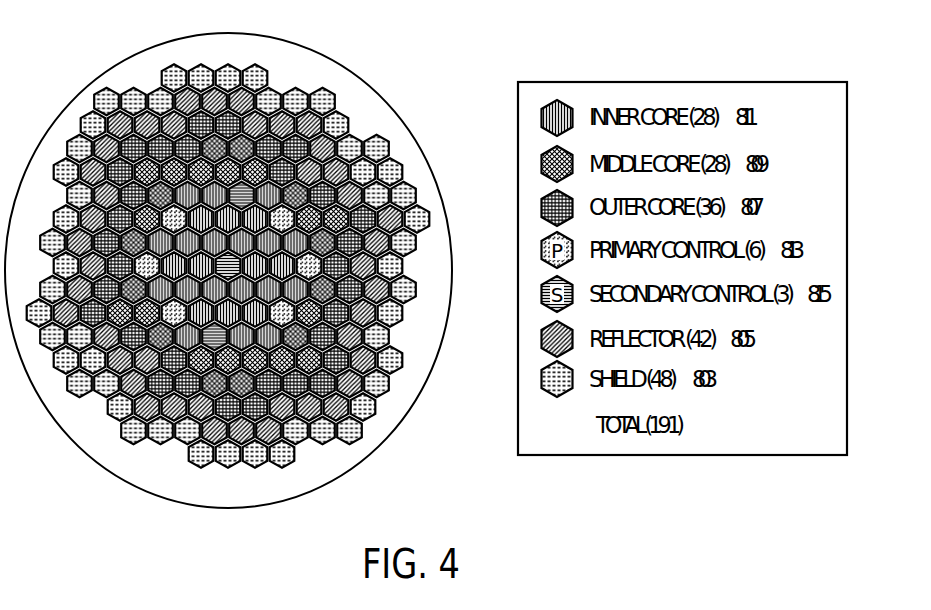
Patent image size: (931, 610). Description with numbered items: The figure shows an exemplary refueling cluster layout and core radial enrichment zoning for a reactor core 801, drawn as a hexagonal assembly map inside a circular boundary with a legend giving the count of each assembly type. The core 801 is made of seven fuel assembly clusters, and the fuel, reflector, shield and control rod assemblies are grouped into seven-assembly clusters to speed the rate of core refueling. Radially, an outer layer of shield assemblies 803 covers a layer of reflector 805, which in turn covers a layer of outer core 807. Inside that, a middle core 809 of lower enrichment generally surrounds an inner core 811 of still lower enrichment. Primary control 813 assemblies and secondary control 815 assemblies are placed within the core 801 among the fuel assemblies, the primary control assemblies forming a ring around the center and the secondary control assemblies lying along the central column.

The core 801 is at (349, 131).
The shield assemblies 803 is at (358, 433).
The reflector 805 is at (350, 410).
The outer core 807 is at (336, 388).
The middle core 809 is at (320, 318).
The inner core 811 is at (308, 296).
The primary control assemblies 813 is at (322, 268).
The secondary control assemblies 815 is at (226, 349).